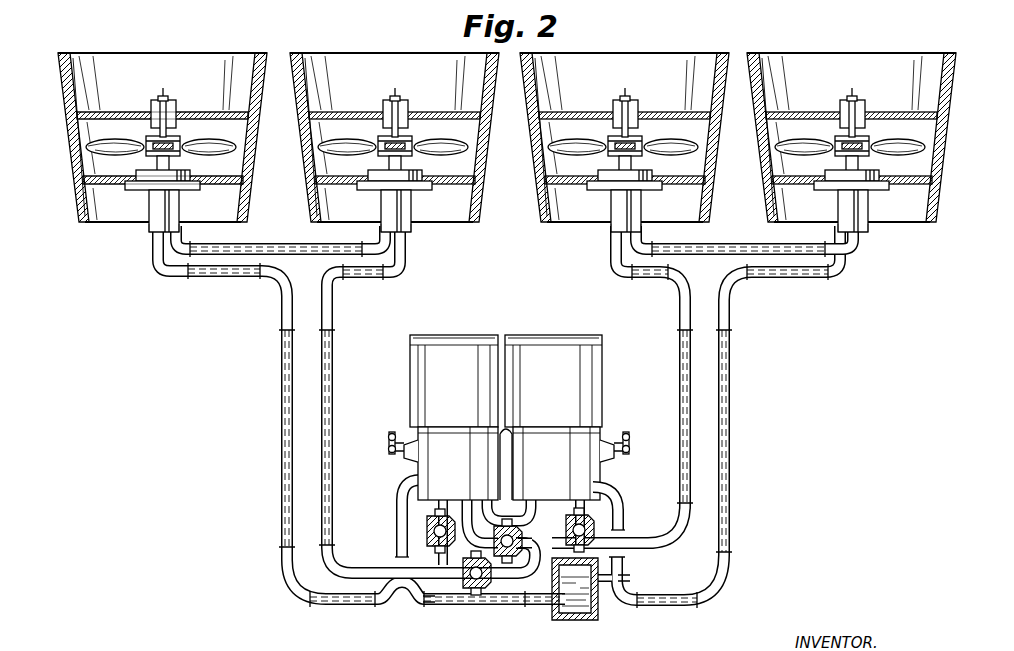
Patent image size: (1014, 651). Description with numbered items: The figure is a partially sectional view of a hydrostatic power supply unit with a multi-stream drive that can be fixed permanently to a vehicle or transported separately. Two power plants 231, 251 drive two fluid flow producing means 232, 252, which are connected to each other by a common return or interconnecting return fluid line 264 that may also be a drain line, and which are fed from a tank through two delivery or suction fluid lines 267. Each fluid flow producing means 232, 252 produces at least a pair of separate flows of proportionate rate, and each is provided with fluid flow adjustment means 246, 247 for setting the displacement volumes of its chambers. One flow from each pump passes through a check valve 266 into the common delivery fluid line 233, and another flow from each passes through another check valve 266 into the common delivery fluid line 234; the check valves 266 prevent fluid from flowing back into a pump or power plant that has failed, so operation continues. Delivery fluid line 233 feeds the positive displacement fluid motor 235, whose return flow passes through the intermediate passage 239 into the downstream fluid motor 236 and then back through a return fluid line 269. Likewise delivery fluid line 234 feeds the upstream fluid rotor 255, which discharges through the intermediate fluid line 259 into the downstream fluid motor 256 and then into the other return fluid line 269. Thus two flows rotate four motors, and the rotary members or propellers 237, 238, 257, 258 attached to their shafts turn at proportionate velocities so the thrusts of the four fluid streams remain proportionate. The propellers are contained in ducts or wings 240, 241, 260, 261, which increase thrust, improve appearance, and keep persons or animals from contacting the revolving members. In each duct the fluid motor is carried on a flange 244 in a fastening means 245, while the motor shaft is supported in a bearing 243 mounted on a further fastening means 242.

The power plant 231 is at (440, 345).
The fluid flow producing means 232 is at (450, 437).
The delivery fluid line 233 is at (334, 388).
The delivery fluid line 234 is at (682, 372).
The positive displacement fluid motor 235 is at (410, 228).
The downstream fluid motor 236 is at (150, 232).
The rotary member 237 is at (440, 138).
The rotary member 238 is at (205, 138).
The intermediate passage 239 is at (280, 243).
The duct 240 is at (292, 100).
The duct 241 is at (243, 168).
The fastening means 242 is at (152, 103).
The bearing 243 is at (163, 98).
The flange 244 is at (145, 186).
The fastening means 245 is at (208, 188).
The fluid flow adjustment means 246 is at (392, 432).
The fluid flow adjustment means 247 is at (626, 432).
The power plant 251 is at (533, 345).
The fluid flow producing means 252 is at (548, 437).
The positive displacement upstream fluid rotor 255 is at (608, 230).
The downstream fluid motor 256 is at (868, 240).
The rotary member 257 is at (578, 138).
The rotary member 258 is at (900, 138).
The intermediate fluid line 259 is at (768, 255).
The duct 260 is at (522, 160).
The duct 261 is at (752, 190).
The interconnecting return fluid line 264 is at (505, 516).
The check valve 266 is at (428, 531).
The delivery fluid line 267 is at (625, 580).
The return fluid line 269 is at (282, 386).